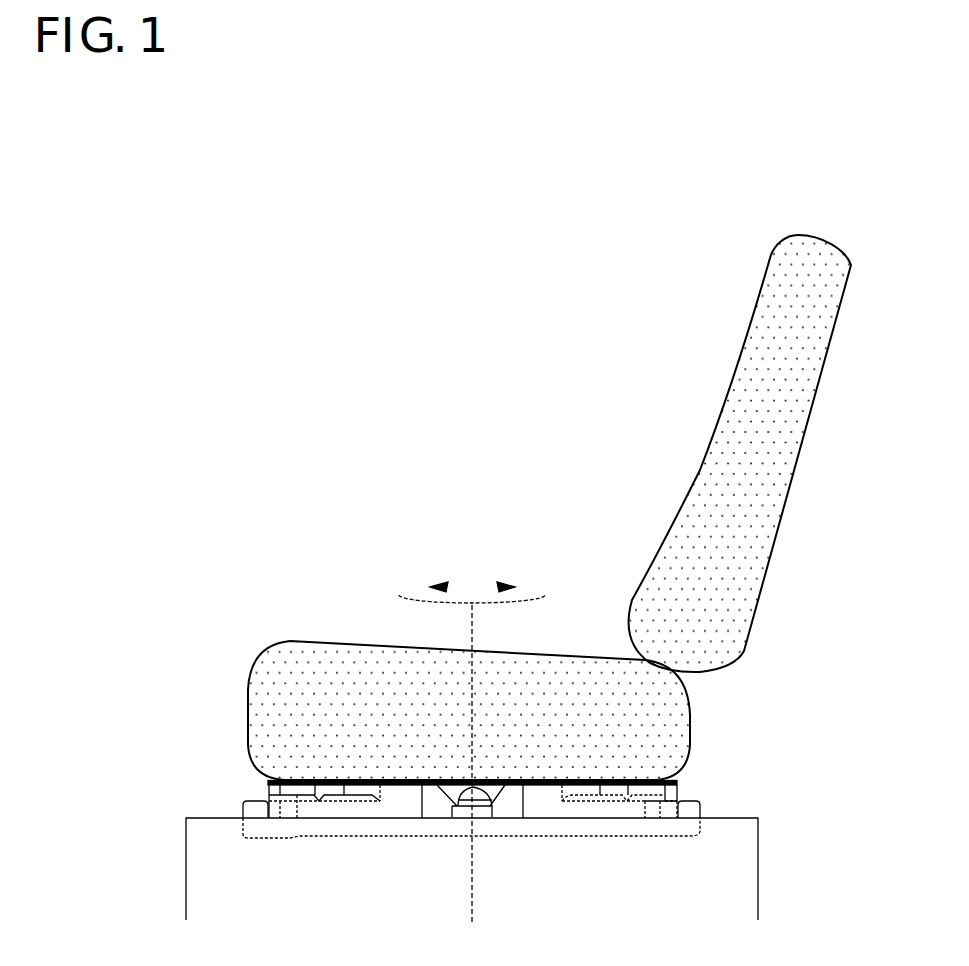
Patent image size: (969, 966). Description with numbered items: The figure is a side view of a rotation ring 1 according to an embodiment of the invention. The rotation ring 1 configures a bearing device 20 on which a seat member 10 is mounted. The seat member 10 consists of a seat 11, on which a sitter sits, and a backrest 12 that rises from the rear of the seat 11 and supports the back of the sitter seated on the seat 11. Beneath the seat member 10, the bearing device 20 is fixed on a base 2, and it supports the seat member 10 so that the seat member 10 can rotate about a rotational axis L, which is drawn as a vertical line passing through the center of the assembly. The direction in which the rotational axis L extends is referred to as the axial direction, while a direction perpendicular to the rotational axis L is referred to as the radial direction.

The rotation ring 1 is at (255, 437).
The base 2 is at (186, 874).
The seat member 10 is at (449, 652).
The seat 11 is at (394, 648).
The backrest 12 is at (722, 404).
The bearing device 20 is at (262, 796).
The rotational axis L is at (475, 628).